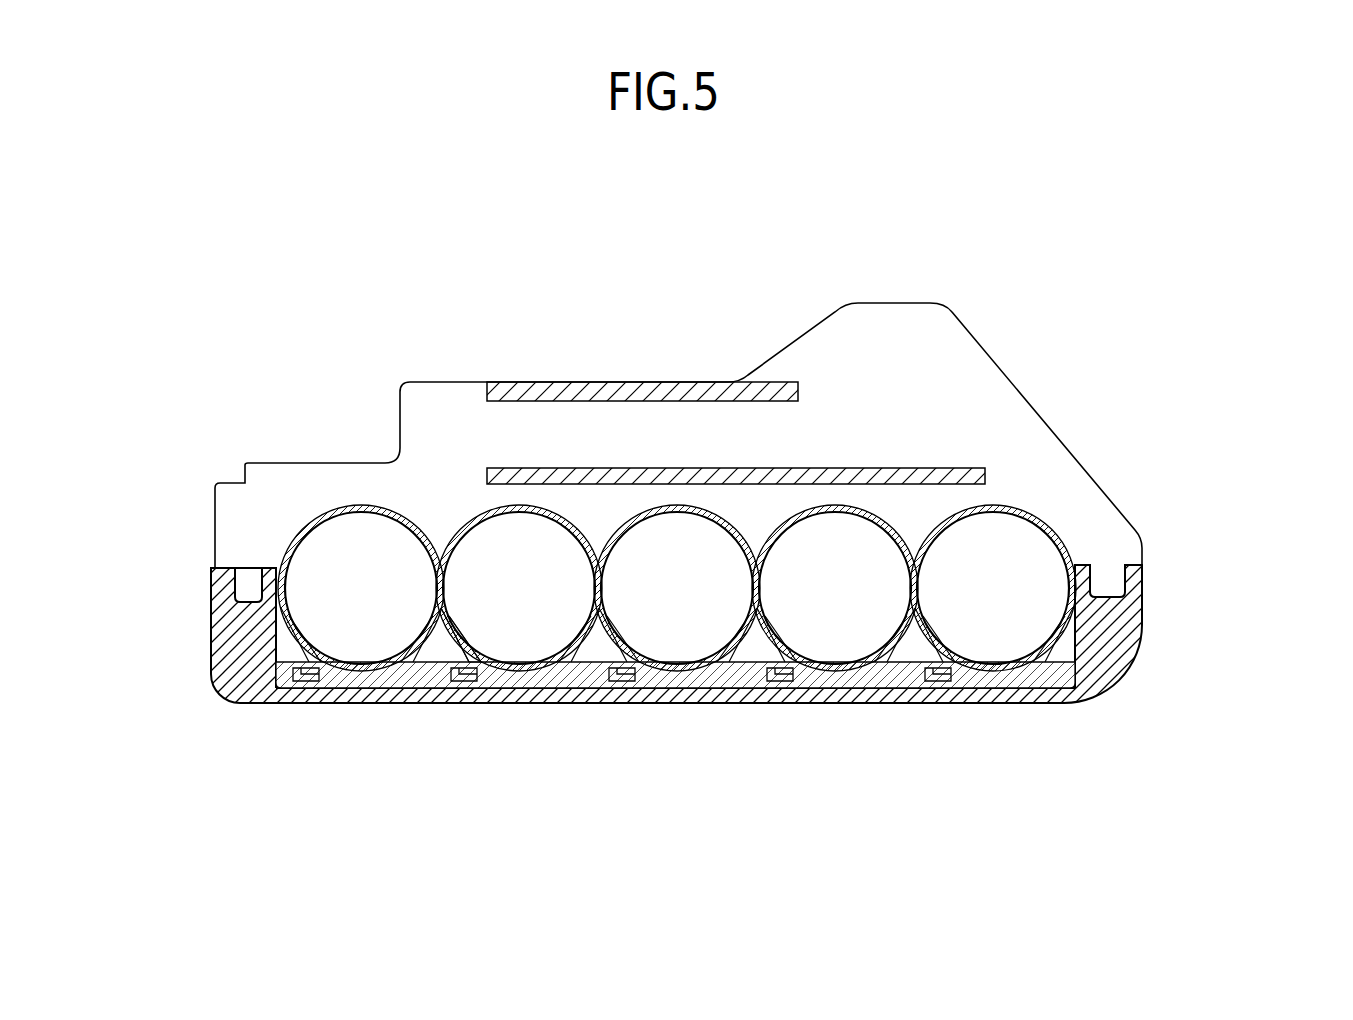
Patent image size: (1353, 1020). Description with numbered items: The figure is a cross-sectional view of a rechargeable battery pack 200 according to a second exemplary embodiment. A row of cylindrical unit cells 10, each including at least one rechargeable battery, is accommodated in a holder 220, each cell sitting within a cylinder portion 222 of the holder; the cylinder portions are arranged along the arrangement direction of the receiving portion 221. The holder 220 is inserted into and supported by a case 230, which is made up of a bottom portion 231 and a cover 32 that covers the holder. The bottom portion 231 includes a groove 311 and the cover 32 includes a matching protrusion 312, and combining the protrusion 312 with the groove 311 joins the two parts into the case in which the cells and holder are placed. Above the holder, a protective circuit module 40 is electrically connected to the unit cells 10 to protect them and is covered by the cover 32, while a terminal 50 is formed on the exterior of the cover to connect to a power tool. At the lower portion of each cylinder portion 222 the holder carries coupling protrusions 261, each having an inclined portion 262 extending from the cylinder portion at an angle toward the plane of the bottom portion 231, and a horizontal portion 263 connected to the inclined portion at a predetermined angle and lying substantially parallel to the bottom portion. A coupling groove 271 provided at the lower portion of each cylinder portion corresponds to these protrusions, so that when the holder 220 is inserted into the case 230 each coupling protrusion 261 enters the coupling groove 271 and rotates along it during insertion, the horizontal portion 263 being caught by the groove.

The rechargeable battery pack 200 is at (520, 277).
The unit cell 10 is at (1013, 560).
The protective circuit module 40 is at (690, 470).
The terminal 50 is at (593, 386).
The holder 220 is at (887, 509).
The receiving portion 221 is at (677, 588).
The cylinder portion 222 is at (1013, 503).
The case 230 is at (710, 536).
The bottom portion 231 is at (1135, 585).
The cover 32 is at (1118, 533).
The groove 311 is at (243, 585).
The protrusion 312 is at (249, 588).
The coupling protrusion 261 is at (525, 766).
The inclined portion 262 is at (483, 684).
The horizontal portion 263 is at (461, 688).
The coupling groove 271 is at (618, 684).